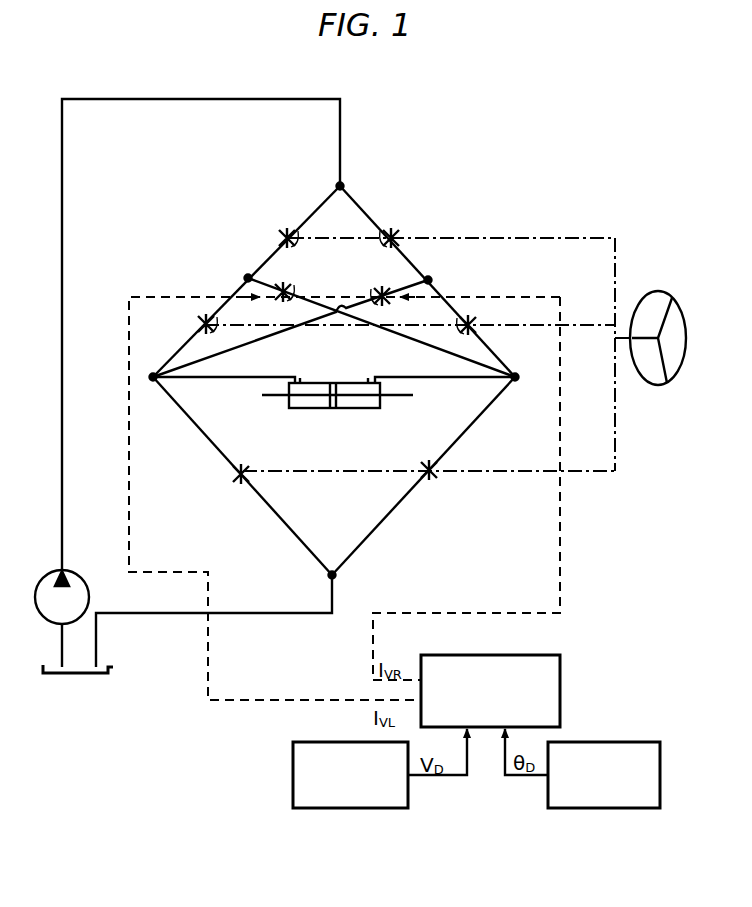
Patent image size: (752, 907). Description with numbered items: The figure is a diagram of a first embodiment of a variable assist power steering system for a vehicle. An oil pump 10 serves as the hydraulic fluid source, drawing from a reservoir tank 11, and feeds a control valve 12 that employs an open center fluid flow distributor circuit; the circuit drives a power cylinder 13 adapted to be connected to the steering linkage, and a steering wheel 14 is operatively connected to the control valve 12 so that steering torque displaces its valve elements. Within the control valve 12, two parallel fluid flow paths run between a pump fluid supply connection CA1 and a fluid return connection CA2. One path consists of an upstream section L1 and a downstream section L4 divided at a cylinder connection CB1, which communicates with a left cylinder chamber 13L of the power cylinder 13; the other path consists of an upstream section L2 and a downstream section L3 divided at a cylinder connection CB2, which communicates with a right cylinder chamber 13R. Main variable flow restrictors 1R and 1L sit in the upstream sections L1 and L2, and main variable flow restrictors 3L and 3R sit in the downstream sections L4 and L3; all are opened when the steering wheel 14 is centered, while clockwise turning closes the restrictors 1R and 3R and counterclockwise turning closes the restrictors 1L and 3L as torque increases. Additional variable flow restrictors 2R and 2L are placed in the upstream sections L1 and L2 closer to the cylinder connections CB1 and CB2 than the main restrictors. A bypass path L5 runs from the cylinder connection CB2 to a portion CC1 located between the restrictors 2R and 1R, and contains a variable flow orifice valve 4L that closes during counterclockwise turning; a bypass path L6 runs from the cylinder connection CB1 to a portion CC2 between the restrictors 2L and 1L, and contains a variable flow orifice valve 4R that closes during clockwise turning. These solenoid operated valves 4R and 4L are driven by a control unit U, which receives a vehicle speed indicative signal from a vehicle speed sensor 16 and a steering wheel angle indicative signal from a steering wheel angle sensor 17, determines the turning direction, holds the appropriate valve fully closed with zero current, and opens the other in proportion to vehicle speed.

The oil pump 10 is at (72, 574).
The reservoir tank 11 is at (113, 667).
The control valve 12 is at (259, 250).
The power cylinder 13 is at (334, 397).
The left cylinder chamber 13L is at (308, 410).
The right cylinder chamber 13R is at (360, 410).
The steering wheel 14 is at (656, 388).
The vehicle speed sensor 16 is at (293, 752).
The steering wheel angle sensor 17 is at (621, 742).
The main variable flow restrictor 1L is at (398, 235).
The main variable flow restrictor 1R is at (285, 233).
The additional variable flow restrictor 2L is at (476, 325).
The additional variable flow restrictor 2R is at (205, 317).
The main variable flow restrictor 3L is at (262, 458).
The main variable flow restrictor 3R is at (412, 456).
The variable flow orifice valve 4L is at (288, 288).
The variable flow orifice valve 4R is at (378, 291).
The upstream section L1 is at (318, 198).
The upstream section L2 is at (367, 212).
The downstream section L3 is at (483, 414).
The downstream section L4 is at (186, 413).
The bypass path L5 is at (401, 334).
The bypass path L6 is at (254, 343).
The pump fluid supply connection CA1 is at (342, 184).
The fluid return connection CA2 is at (335, 576).
The cylinder connection CB1 is at (153, 374).
The cylinder connection CB2 is at (517, 374).
The portion CC1 is at (246, 276).
The portion CC2 is at (430, 280).
The control unit U is at (562, 661).